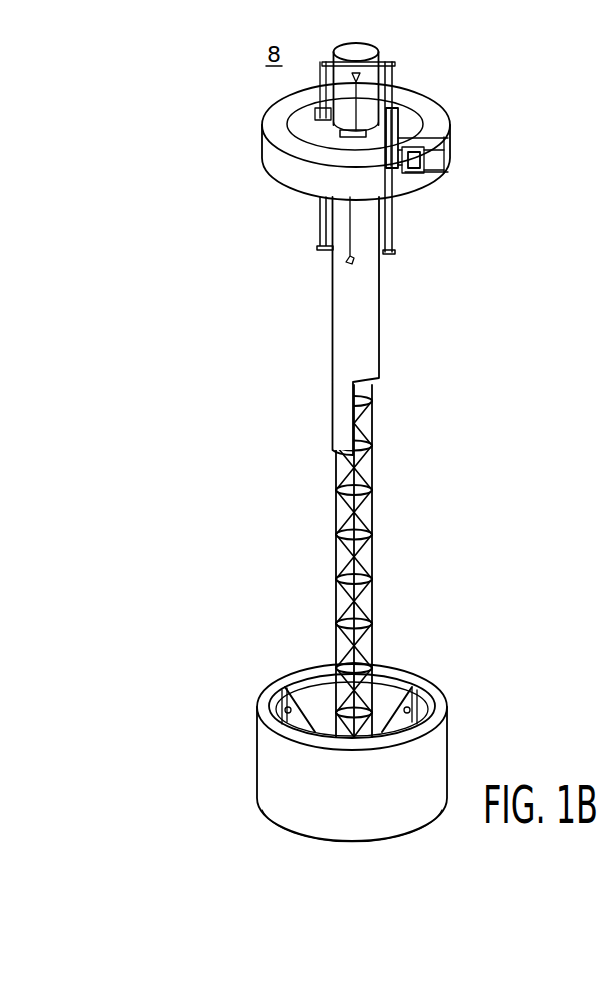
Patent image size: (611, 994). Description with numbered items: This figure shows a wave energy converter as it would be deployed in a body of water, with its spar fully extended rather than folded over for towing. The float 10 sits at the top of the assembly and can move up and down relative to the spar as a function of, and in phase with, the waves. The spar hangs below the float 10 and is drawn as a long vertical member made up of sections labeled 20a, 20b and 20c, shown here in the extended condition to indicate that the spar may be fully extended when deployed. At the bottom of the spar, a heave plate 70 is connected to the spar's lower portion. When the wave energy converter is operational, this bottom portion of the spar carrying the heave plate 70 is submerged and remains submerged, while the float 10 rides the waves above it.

The float 10 is at (452, 142).
The upper cylinder 20a is at (366, 50).
The tube 20b is at (379, 350).
The lattice section 20c is at (376, 568).
The heave plate 70 is at (258, 735).